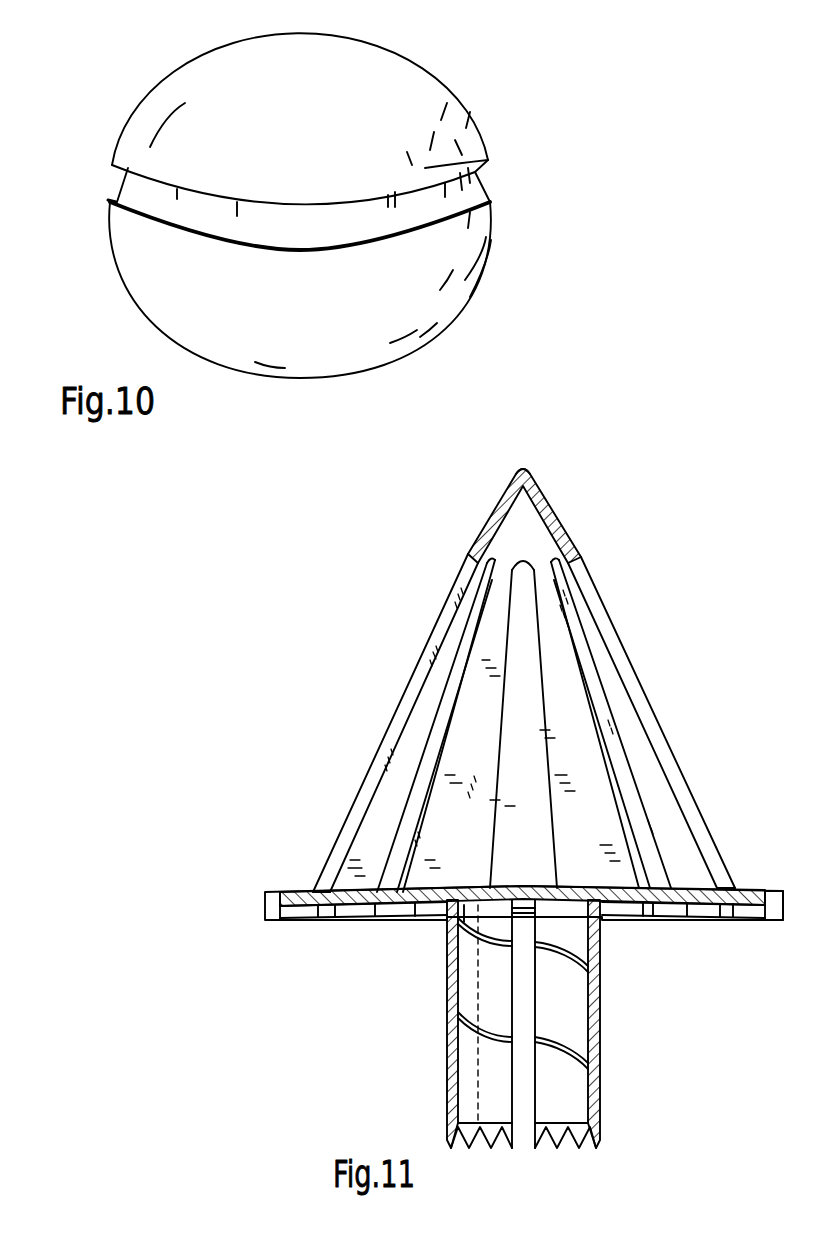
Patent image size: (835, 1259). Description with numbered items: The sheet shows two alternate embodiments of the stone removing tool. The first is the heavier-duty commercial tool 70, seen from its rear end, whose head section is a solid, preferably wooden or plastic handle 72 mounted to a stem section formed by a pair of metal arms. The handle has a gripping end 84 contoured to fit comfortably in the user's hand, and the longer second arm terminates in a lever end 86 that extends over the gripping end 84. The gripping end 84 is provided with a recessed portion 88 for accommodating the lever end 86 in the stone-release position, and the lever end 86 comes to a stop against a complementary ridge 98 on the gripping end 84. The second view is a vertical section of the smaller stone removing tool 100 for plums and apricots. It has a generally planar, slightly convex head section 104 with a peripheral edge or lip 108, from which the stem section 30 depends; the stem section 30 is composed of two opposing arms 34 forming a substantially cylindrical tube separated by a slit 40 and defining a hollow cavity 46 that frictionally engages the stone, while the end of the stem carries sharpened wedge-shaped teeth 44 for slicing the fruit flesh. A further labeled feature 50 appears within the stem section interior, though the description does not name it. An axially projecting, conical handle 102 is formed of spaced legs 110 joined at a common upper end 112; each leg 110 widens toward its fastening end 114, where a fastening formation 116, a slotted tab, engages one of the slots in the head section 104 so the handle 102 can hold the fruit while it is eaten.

In FIG. 10, the tool 70 is at (557, 98).
In FIG. 10, the lever end 86 is at (417, 117).
In FIG. 10, the recessed portion 88 is at (467, 192).
In FIG. 10, the handle 72 is at (457, 238).
In FIG. 10, the complementary ridge 98 is at (115, 200).
In FIG. 10, the gripping end 84 is at (330, 337).
In FIG. 11, the stone removing tool 100 is at (660, 468).
In FIG. 11, the common upper end 112 is at (521, 466).
In FIG. 11, the handle 102 is at (484, 522).
In FIG. 11, the legs 110 is at (433, 645).
In FIG. 11, the fastening end 114 is at (327, 882).
In FIG. 11, the peripheral edge or lip 108 is at (265, 912).
In FIG. 11, the head section 104 is at (747, 890).
In FIG. 11, the fastening formation 116 is at (360, 910).
In FIG. 11, the stem section 30 is at (602, 950).
In FIG. 11, the arms 34 is at (445, 985).
In FIG. 11, the slit 40 is at (510, 1080).
In FIG. 11, the cavity 46 is at (472, 1050).
In FIG. 11, the helical thread 50 is at (577, 1050).
In FIG. 11, the teeth 44 is at (480, 1147).